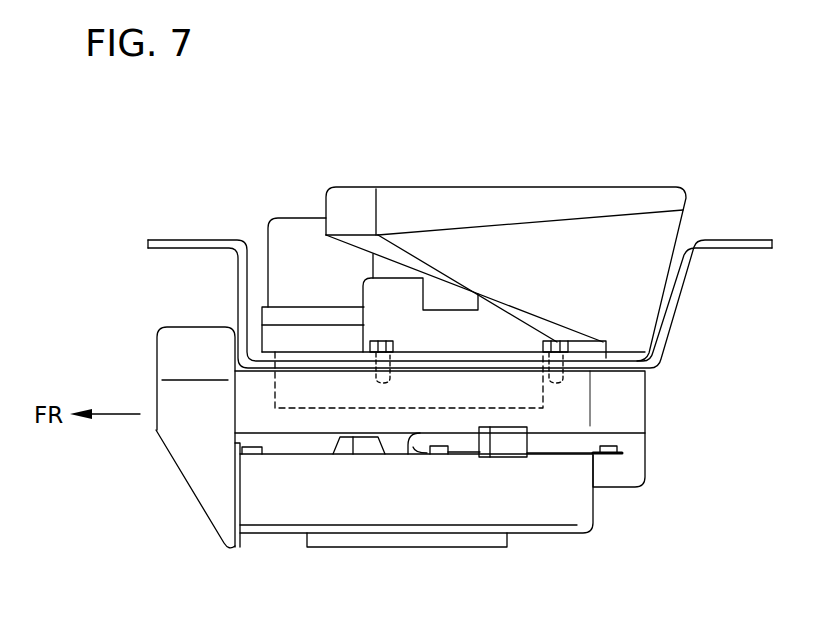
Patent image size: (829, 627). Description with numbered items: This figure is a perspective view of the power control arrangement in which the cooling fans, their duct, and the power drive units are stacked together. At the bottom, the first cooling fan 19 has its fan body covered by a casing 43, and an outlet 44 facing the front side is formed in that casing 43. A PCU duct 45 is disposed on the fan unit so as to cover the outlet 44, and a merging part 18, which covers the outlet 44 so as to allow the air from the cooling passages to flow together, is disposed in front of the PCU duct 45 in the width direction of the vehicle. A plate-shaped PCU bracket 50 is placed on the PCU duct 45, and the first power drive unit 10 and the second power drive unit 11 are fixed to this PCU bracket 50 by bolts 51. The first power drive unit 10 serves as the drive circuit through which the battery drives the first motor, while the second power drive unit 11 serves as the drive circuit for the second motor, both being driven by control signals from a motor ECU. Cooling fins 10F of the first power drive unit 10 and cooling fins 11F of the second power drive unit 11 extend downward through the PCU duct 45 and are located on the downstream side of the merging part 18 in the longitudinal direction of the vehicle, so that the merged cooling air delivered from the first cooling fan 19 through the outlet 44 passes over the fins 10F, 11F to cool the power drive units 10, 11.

The first power drive unit 10 is at (393, 295).
The second power drive unit 11 is at (298, 243).
The PCU bracket 50 is at (681, 276).
The bolts 51 is at (378, 343).
The cooling fins 10F is at (527, 393).
The PCU duct 45 is at (156, 430).
The outlet 44 is at (233, 503).
The merging part 18 is at (202, 453).
The casing 43 is at (547, 507).
The first cooling fan 19 is at (438, 507).
The cooling fins 11F is at (307, 395).